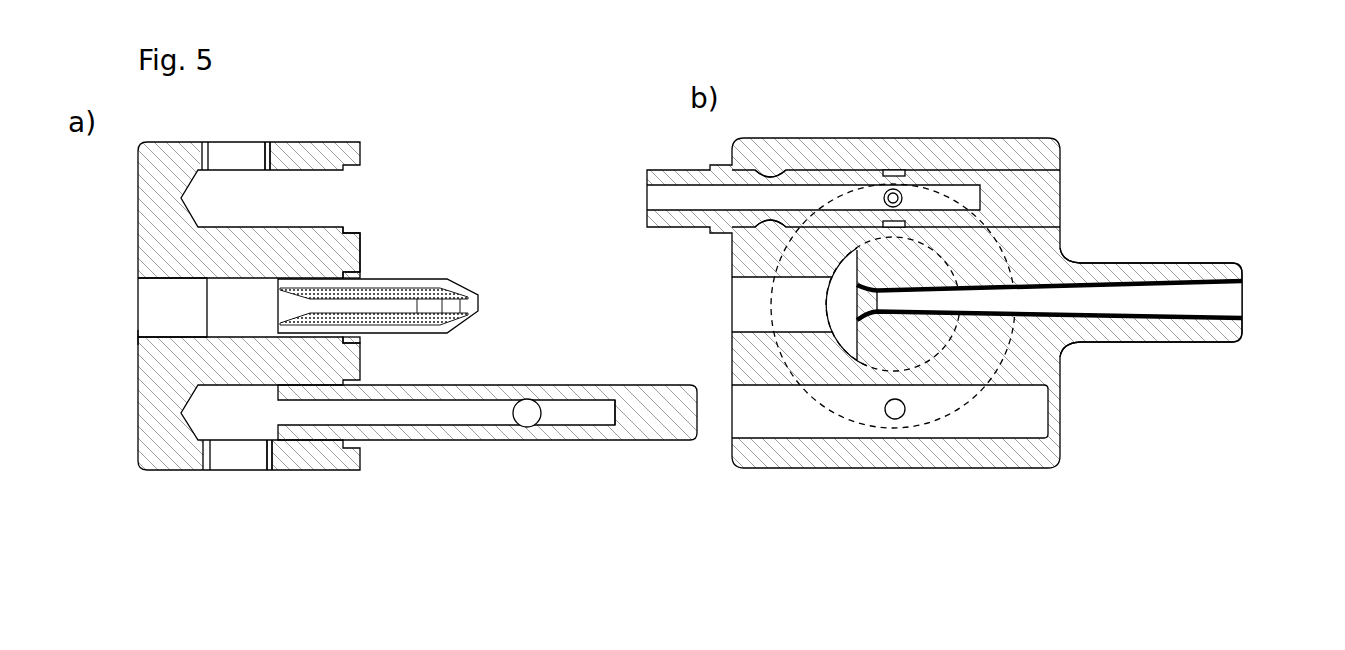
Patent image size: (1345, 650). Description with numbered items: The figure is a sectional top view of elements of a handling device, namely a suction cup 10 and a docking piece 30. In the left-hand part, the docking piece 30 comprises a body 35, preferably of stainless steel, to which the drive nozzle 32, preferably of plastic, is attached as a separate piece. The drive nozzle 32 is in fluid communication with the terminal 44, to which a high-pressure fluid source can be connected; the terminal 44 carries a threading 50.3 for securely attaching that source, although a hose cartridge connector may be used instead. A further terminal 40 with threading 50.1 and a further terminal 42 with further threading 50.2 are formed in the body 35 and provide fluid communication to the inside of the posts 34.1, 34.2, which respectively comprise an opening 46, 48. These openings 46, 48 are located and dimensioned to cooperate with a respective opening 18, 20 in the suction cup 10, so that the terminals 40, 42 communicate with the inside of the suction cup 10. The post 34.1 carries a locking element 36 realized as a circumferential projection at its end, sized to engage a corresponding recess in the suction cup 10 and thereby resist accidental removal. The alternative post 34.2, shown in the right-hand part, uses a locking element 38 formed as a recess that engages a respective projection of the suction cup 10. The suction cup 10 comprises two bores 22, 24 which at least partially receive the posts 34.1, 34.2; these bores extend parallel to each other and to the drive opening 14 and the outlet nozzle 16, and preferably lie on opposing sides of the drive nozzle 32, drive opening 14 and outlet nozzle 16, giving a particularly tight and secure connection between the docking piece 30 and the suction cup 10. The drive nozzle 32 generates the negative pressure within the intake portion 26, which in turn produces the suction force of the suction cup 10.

The suction cup 10 is at (1049, 108).
The drive opening 14 is at (830, 303).
The outlet nozzle 16 is at (1222, 298).
The opening 18 is at (900, 410).
The opening 20 is at (899, 190).
The bore 22 is at (993, 416).
The bore 24 is at (1061, 170).
The intake portion 26 is at (845, 318).
The docking piece 30 is at (336, 110).
The drive nozzle 32 is at (430, 277).
The post 34.1 is at (500, 440).
The post 34.2 is at (676, 172).
The body 35 is at (346, 240).
The locking element 36 is at (686, 384).
The locking element 38 is at (763, 183).
The further terminal 40 is at (233, 458).
The further terminal 42 is at (235, 156).
The terminal 44 is at (155, 307).
The opening 46 is at (528, 412).
The opening 48 is at (893, 188).
The threading 50.1 is at (270, 448).
The further threading 50.2 is at (268, 150).
The threading 50.3 is at (138, 340).